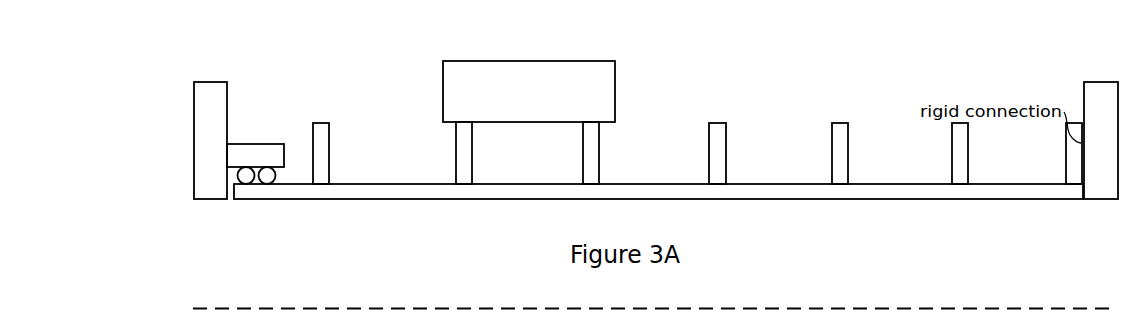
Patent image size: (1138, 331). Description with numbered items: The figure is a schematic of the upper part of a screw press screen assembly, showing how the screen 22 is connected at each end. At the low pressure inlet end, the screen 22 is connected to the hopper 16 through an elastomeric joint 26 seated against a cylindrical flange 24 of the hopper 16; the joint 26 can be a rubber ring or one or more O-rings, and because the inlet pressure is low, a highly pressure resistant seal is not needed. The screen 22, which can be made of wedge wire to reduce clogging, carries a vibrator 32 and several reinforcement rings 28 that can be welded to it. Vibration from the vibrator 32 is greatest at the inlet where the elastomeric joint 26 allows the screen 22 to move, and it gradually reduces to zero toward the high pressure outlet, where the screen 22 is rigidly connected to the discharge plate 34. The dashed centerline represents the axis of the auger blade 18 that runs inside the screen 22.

The hopper 16 is at (208, 193).
The auger blade 18 is at (702, 308).
The screen 22 is at (432, 192).
The flange 24 is at (240, 153).
The elastomeric joint 26 is at (278, 170).
The reinforcement rings 28 is at (843, 142).
The vibrator 32 is at (529, 122).
The discharge plate 34 is at (1110, 195).